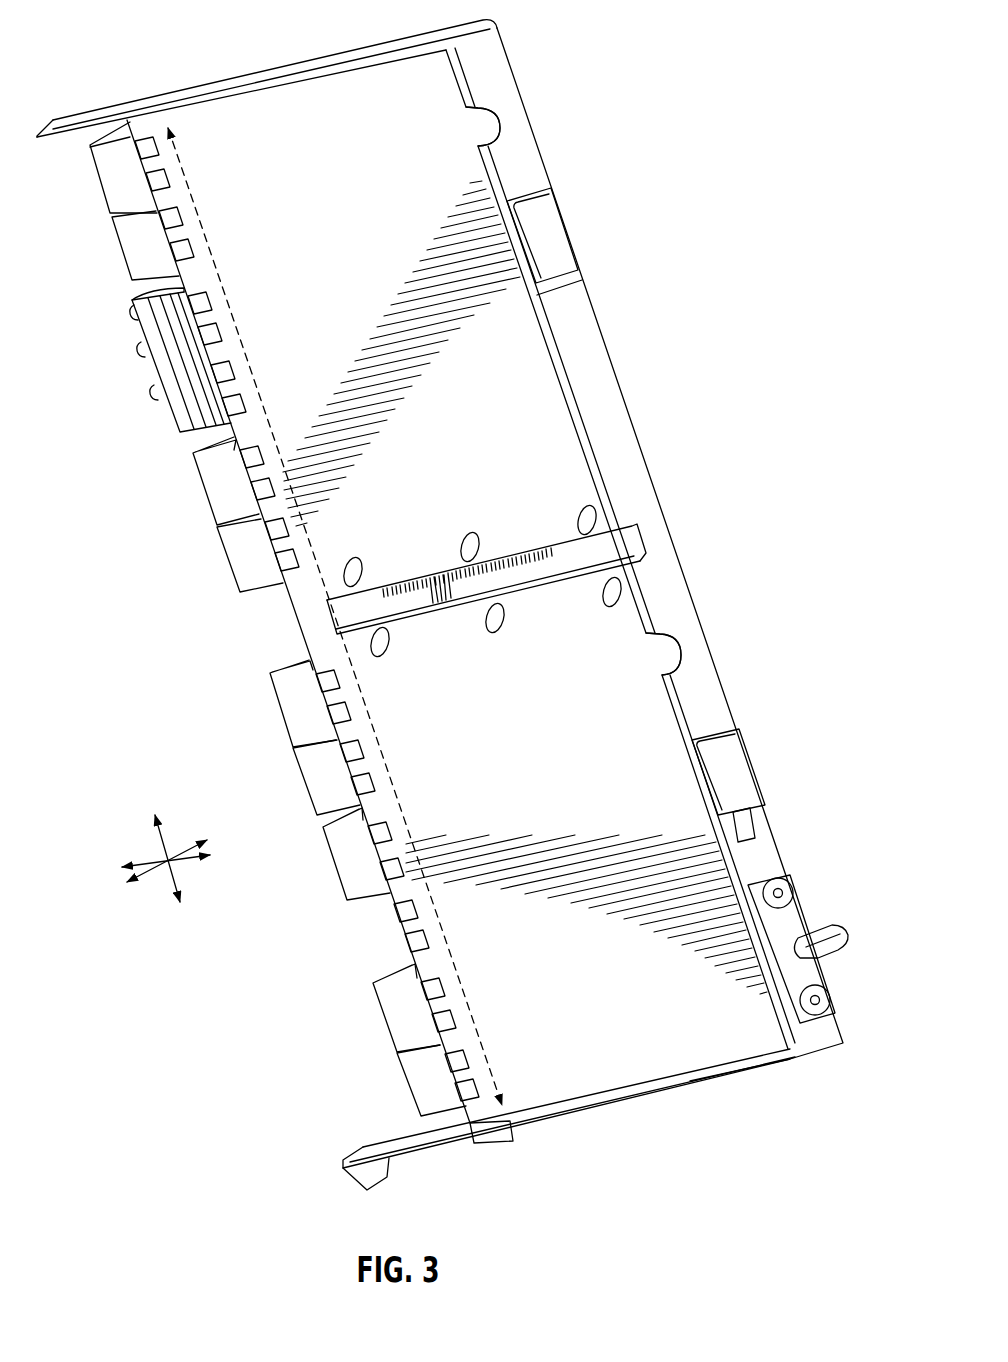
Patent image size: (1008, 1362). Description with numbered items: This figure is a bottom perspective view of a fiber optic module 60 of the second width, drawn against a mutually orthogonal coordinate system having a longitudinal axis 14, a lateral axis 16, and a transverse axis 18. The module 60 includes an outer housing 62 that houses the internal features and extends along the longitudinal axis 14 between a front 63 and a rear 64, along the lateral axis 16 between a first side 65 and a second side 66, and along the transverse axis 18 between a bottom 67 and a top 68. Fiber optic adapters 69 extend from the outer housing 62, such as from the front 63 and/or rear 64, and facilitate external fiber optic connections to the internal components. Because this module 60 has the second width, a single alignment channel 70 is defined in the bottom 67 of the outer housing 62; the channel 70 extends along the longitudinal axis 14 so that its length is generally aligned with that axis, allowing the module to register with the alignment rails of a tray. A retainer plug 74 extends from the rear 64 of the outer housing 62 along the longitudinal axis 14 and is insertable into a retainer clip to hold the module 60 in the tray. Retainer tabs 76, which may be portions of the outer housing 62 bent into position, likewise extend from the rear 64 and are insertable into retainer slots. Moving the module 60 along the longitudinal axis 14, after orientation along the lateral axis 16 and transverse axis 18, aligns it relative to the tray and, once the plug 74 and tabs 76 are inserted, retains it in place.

The module 60 is at (645, 166).
The outer housing 62 is at (378, 77).
The front 63 is at (272, 644).
The rear 64 is at (643, 449).
The first side 65 is at (670, 1110).
The second side 66 is at (193, 82).
The bottom 67 is at (295, 118).
The top 68 is at (636, 317).
The fiber optic adapters 69 is at (187, 390).
The alignment channel 70 is at (552, 551).
The retainer plug 74 is at (838, 913).
The retainer tab 76 is at (503, 116).
The longitudinal axis 14 is at (192, 860).
The lateral axis 16 is at (160, 838).
The transverse axis 18 is at (182, 853).